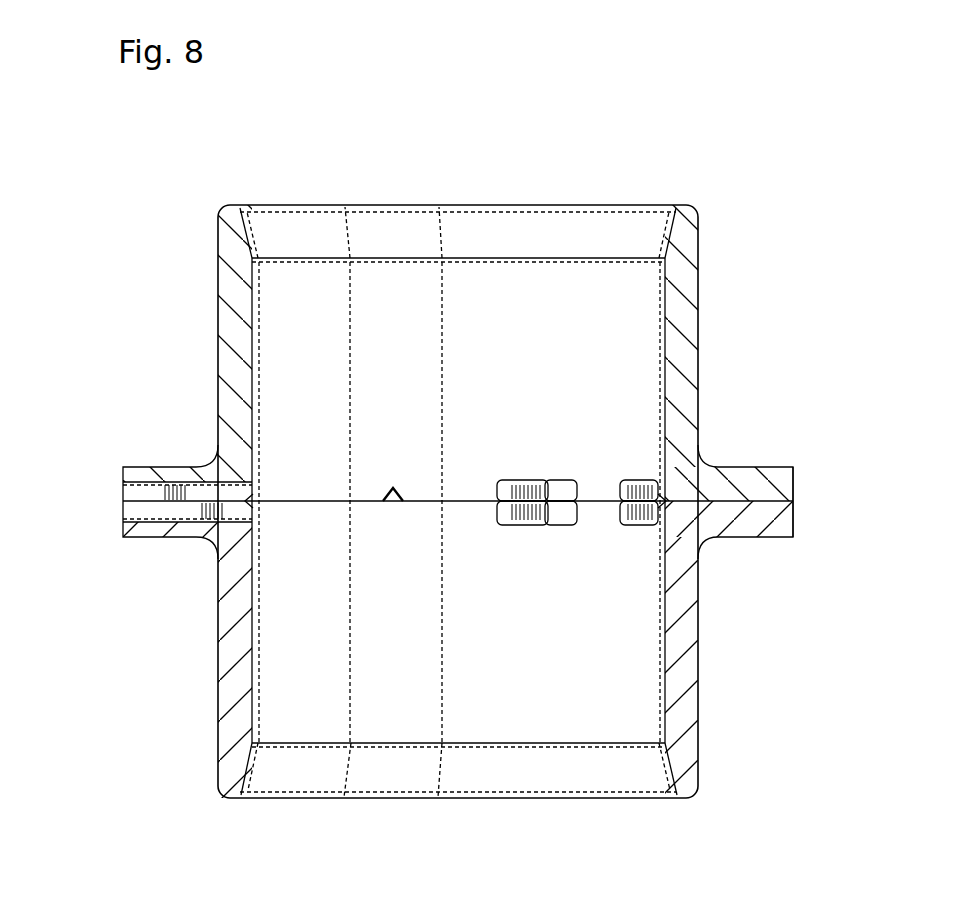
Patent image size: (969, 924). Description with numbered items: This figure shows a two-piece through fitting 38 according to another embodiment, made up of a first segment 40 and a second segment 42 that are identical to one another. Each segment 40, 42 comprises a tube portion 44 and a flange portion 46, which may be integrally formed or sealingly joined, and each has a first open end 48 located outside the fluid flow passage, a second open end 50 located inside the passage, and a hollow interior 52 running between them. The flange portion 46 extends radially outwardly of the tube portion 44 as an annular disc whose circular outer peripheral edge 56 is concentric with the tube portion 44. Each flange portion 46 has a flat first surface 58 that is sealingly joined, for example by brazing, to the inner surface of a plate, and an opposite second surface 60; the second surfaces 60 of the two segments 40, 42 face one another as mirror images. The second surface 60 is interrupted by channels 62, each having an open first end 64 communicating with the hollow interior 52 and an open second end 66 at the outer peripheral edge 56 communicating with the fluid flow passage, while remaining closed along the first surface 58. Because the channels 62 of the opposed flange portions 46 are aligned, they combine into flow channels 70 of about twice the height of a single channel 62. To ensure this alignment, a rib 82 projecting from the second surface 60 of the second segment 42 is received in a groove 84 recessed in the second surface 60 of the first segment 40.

The through fitting 38 is at (147, 350).
The first segment 40 is at (258, 205).
The second segment 42 is at (315, 800).
The tube portion 44 is at (228, 287).
The flange portion 46 is at (750, 477).
The first open end 48 is at (495, 228).
The second open end 50 is at (317, 500).
The hollow interior 52 is at (386, 339).
The outer peripheral edge 56 is at (793, 482).
The first surface 58 is at (177, 468).
The second surface 60 is at (712, 498).
The channel 62 is at (130, 497).
The open first end 64 is at (252, 493).
The open second end 66 is at (123, 519).
The combined flow channel 70 is at (130, 502).
The rib 82 is at (390, 503).
The groove 84 is at (402, 488).